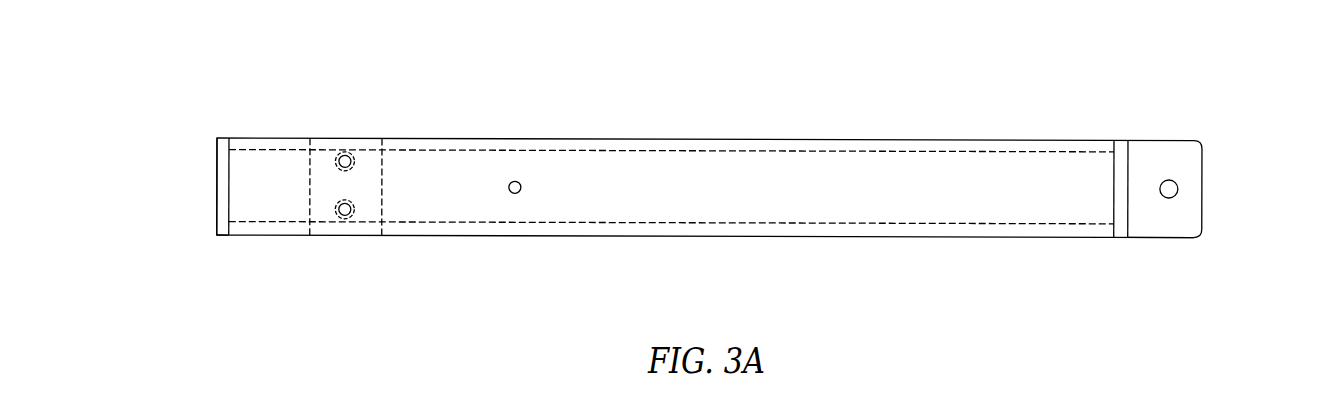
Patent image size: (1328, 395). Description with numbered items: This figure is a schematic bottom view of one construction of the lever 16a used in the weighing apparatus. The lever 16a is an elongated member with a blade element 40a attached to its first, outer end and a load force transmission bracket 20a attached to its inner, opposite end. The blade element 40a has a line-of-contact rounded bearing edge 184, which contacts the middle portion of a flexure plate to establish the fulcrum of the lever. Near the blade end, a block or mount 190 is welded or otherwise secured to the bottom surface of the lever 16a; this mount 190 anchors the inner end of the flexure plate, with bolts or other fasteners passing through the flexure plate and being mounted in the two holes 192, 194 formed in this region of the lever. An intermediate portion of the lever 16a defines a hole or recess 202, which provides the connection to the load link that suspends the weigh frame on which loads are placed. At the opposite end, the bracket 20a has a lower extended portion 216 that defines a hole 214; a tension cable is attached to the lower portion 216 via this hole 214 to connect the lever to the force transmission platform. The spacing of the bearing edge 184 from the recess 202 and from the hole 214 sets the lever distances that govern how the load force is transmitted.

The lever 16a is at (773, 199).
The blade element 40a is at (215, 203).
The bearing edge 184 is at (218, 236).
The block or mount 190 is at (390, 175).
The hole 192 is at (358, 152).
The hole 194 is at (355, 217).
The hole or recess 202 is at (523, 193).
The load force transmission bracket 20a is at (1147, 138).
The hole 214 is at (1177, 178).
The lower extended portion 216 is at (1162, 243).